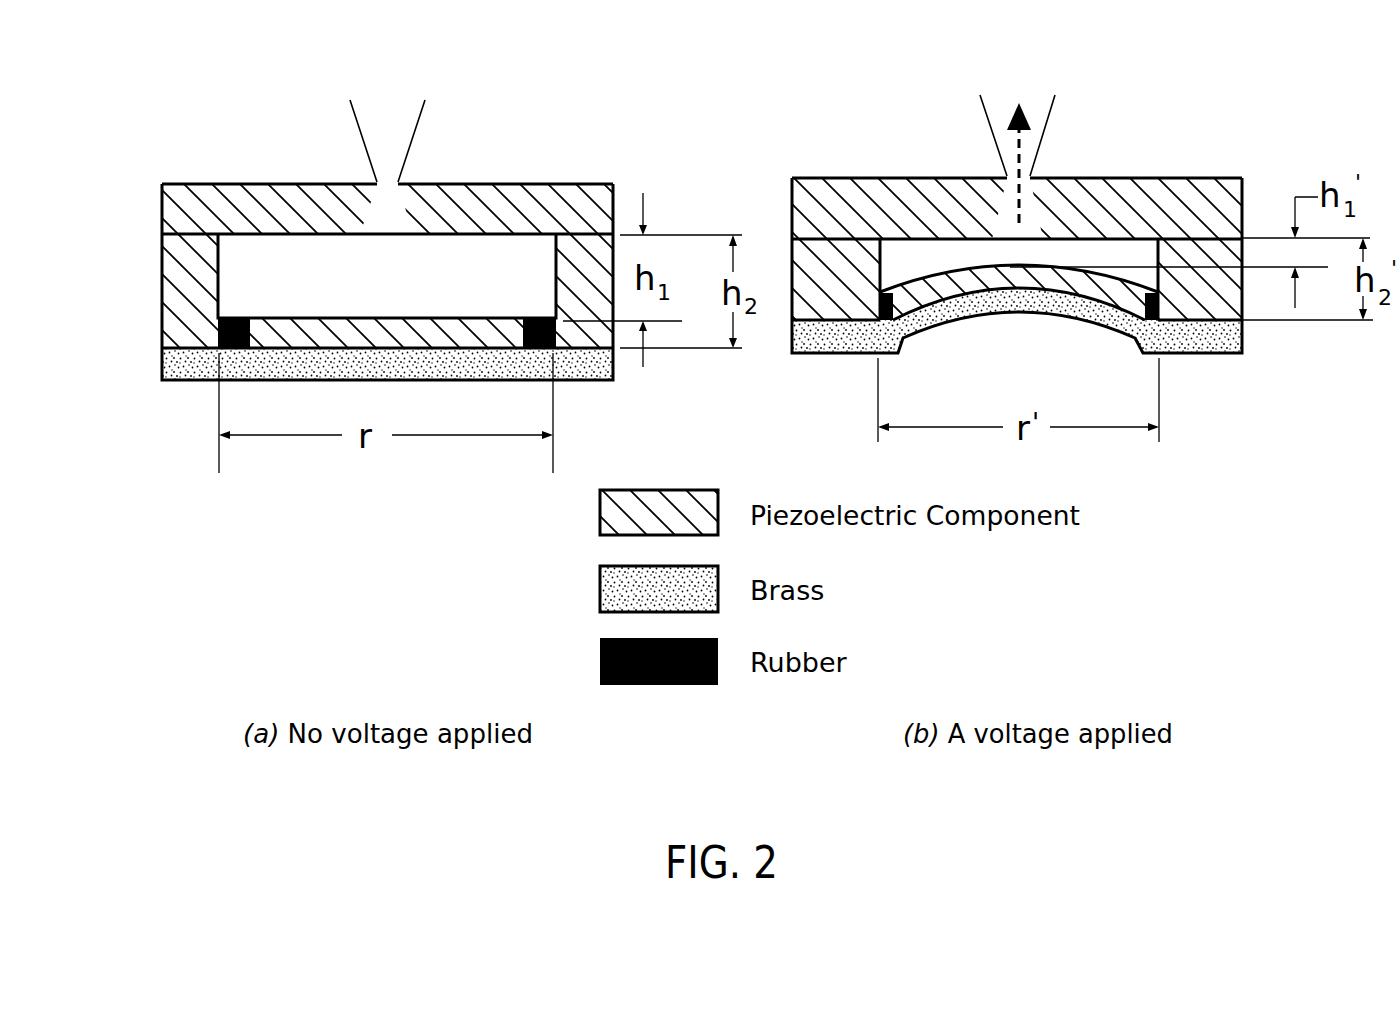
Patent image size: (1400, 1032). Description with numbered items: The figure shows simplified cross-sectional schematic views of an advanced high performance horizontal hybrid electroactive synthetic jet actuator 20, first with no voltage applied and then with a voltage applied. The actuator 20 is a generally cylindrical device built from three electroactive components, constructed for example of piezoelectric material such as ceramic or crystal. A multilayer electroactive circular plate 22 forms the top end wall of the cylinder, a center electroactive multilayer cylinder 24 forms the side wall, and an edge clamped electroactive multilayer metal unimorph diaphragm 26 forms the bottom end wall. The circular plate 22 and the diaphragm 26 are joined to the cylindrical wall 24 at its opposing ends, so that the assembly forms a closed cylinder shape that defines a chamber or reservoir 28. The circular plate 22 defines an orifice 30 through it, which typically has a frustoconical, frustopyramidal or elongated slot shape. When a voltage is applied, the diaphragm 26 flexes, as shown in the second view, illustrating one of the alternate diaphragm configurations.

The advanced high performance horizontal hybrid electroactive synthetic jet actuator 20 is at (724, 268).
The multilayer electroactive circular plate 22 is at (582, 198).
The center electroactive multilayer cylinder 24 is at (162, 260).
The edge clamped electroactive multilayer metal unimorph diaphragm 26 is at (213, 386).
The chamber or reservoir 28 is at (265, 270).
The orifice 30 is at (387, 220).